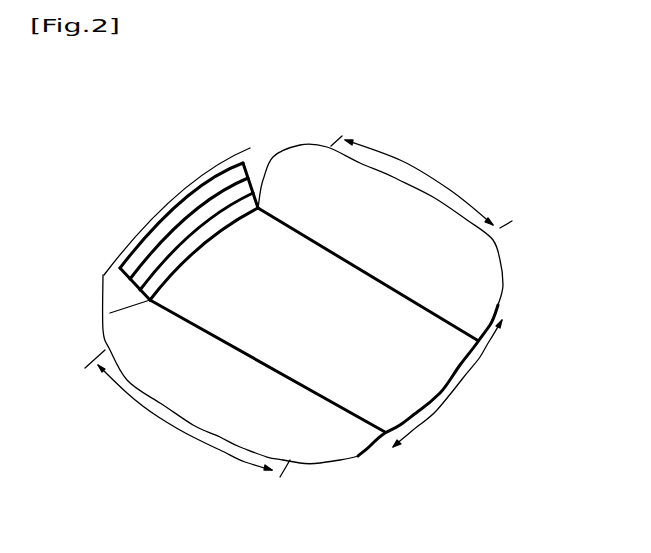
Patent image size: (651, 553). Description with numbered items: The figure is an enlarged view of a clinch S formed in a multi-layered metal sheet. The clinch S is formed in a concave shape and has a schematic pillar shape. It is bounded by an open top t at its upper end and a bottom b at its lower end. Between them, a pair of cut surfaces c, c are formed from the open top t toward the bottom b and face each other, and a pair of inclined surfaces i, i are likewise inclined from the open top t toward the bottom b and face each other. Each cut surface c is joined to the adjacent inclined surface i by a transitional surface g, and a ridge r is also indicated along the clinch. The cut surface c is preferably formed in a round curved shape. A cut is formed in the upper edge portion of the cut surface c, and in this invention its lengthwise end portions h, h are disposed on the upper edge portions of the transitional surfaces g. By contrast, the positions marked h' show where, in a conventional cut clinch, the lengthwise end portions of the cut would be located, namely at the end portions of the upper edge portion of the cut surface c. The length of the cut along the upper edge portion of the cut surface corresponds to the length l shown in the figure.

The clinch S is at (440, 121).
The open top t is at (467, 149).
The ridge r is at (298, 306).
The length l is at (522, 317).
The lengthwise end portion h is at (304, 308).
The end portion h' is at (173, 173).
The transitional surface g is at (280, 148).
The cut surface c is at (463, 377).
The bottom b is at (390, 388).
The inclined surface i is at (313, 168).